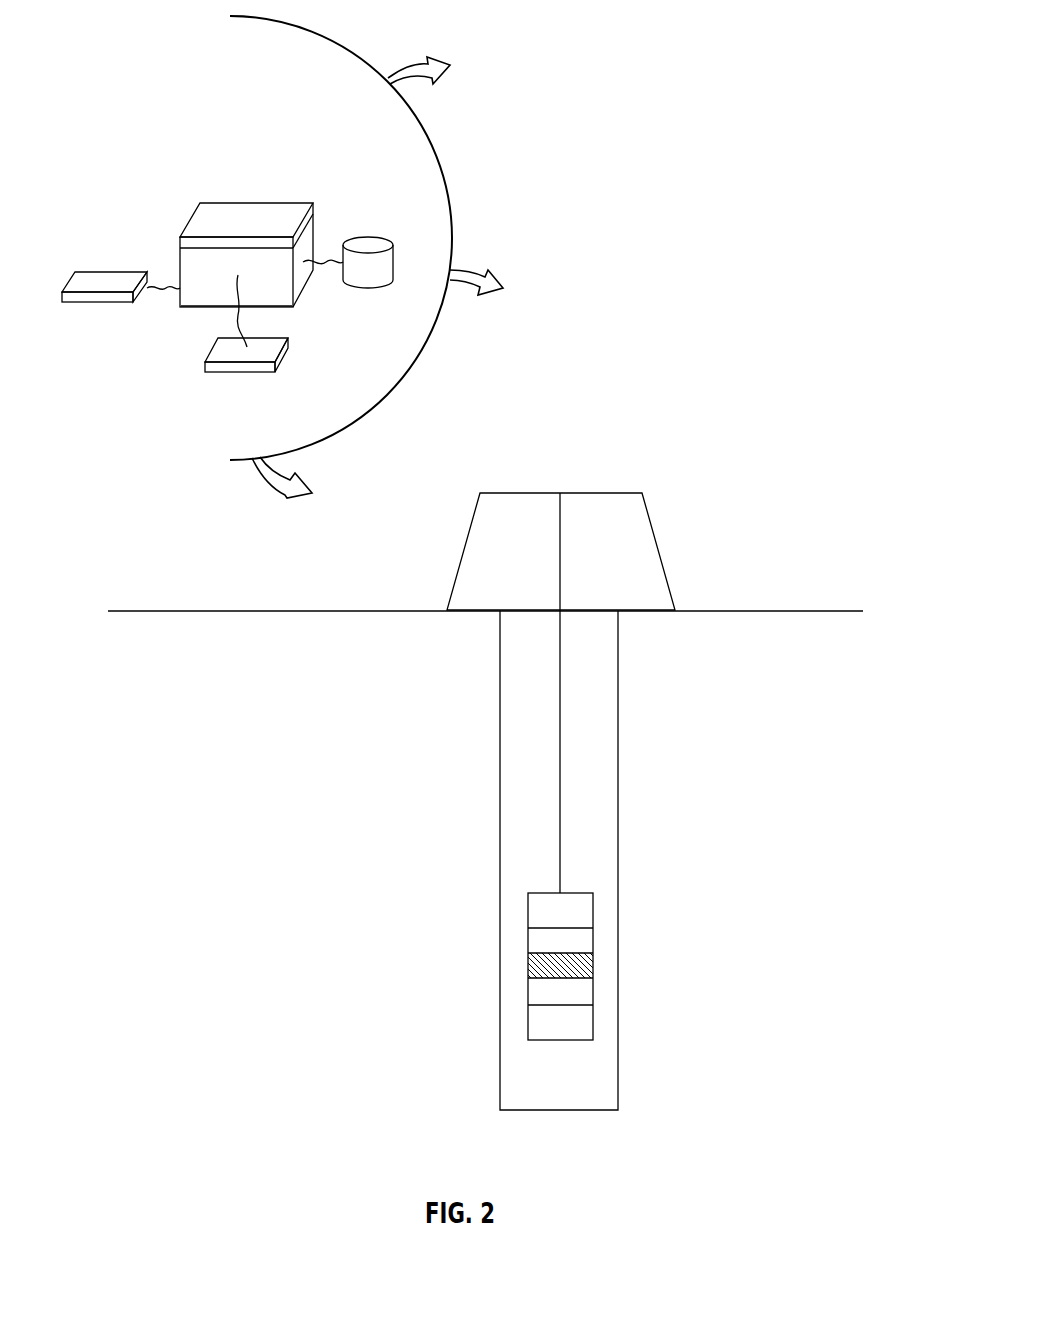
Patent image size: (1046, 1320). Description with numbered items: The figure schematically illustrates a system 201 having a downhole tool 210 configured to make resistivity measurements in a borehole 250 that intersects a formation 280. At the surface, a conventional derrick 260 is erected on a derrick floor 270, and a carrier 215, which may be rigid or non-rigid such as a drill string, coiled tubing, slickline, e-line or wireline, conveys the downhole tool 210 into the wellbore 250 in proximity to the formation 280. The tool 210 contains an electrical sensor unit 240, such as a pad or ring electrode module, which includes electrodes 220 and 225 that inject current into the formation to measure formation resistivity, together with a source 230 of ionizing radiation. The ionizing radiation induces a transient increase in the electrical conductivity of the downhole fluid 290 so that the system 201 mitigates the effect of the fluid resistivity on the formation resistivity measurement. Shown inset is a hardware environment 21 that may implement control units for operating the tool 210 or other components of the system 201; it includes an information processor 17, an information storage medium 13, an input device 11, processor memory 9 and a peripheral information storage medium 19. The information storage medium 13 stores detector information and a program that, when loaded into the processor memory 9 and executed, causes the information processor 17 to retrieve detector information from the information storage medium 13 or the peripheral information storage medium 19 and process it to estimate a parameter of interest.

The processor memory 9 is at (255, 250).
The input device 11 is at (103, 281).
The information storage medium 13 is at (394, 251).
The information processor 17 is at (281, 307).
The peripheral information storage medium 19 is at (205, 363).
The hardware environment 21 is at (185, 114).
The system 201 is at (700, 404).
The downhole tool 210 is at (560, 959).
The carrier 215 is at (562, 747).
The electrode 220 is at (595, 1003).
The ring electrodes 225 is at (595, 933).
The source of ionizing radiation 230 is at (595, 960).
The electrical sensor unit 240 is at (512, 968).
The borehole 250 is at (500, 690).
The derrick 260 is at (662, 552).
The derrick floor 270 is at (645, 598).
The formation 280 is at (763, 984).
The fluid 290 is at (514, 1070).